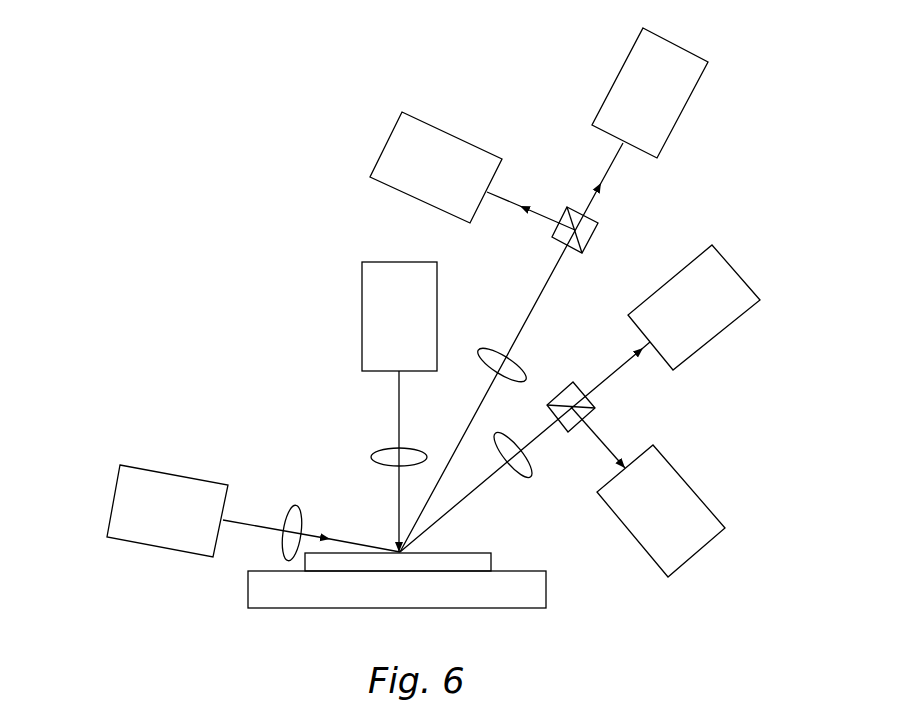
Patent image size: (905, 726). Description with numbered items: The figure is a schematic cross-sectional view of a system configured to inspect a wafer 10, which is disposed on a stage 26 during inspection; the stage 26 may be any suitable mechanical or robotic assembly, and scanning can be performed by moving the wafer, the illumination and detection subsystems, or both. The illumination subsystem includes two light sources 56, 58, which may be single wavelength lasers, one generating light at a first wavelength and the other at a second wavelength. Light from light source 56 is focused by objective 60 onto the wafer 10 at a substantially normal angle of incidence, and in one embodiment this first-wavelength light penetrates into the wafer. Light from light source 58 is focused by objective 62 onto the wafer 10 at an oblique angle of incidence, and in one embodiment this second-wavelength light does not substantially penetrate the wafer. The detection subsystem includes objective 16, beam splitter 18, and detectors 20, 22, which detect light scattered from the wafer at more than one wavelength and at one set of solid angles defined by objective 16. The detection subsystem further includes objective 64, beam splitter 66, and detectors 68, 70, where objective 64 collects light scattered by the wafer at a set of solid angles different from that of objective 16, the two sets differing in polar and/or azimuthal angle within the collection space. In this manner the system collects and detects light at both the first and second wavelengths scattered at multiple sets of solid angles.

The wafer 10 is at (492, 553).
The stage 26 is at (546, 580).
The light source 56 is at (362, 327).
The light source 58 is at (112, 505).
The objective 60 is at (372, 457).
The objective 62 is at (300, 508).
The objective 64 is at (520, 367).
The beam splitter 66 is at (592, 238).
The detector 68 is at (688, 105).
The detector 70 is at (385, 145).
The objective 16 is at (533, 477).
The beam splitter 18 is at (595, 408).
The detector 20 is at (747, 282).
The detector 22 is at (698, 492).